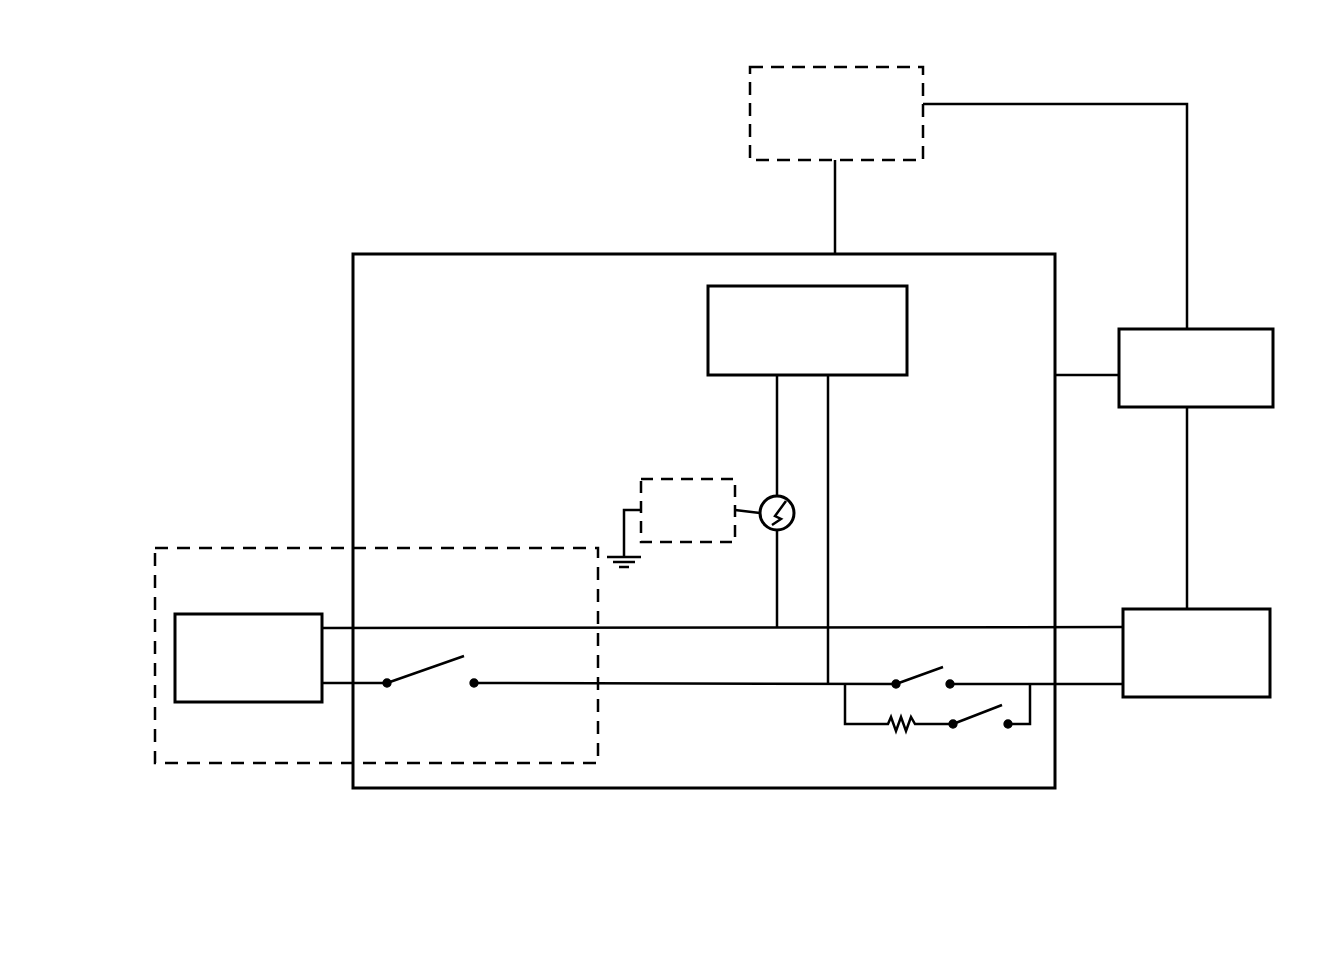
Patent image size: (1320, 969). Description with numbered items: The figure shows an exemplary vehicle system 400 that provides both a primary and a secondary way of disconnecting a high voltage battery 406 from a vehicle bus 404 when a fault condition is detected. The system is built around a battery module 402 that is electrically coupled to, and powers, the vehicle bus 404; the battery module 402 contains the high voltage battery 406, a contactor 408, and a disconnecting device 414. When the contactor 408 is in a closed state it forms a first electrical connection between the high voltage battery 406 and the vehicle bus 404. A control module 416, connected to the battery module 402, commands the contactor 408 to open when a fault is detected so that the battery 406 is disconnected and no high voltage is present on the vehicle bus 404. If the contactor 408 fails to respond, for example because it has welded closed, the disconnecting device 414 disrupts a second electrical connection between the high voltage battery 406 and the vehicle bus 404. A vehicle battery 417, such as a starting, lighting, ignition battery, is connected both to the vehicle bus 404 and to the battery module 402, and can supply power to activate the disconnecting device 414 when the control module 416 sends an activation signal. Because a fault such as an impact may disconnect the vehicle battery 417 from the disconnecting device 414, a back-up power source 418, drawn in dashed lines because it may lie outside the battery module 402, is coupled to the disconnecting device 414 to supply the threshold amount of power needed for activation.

The vehicle system 400 is at (316, 180).
The battery module 402 is at (704, 521).
The vehicle bus 404 is at (1220, 609).
The high voltage battery 406 is at (907, 312).
The contactor 408 is at (904, 652).
The disconnecting device 414 is at (792, 504).
The control module 416 is at (852, 66).
The vehicle battery 417 is at (1210, 329).
The power source 418 is at (673, 479).